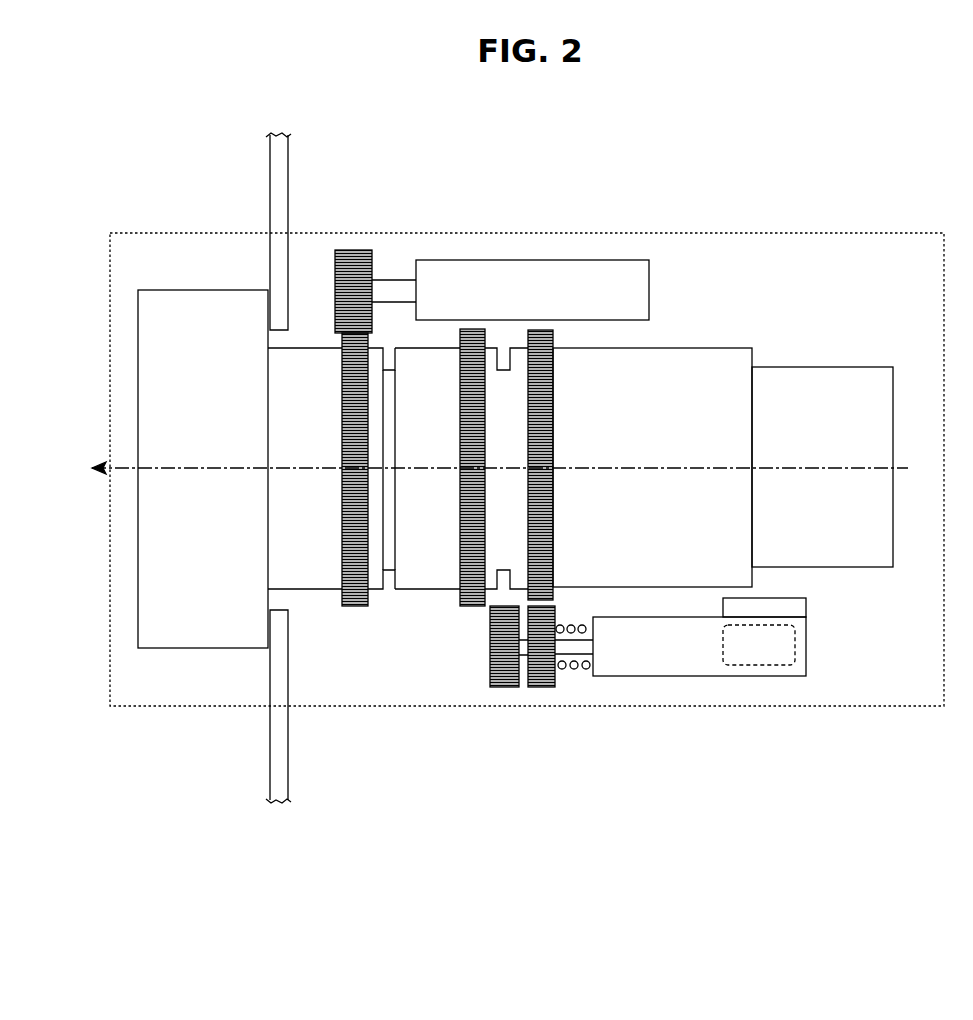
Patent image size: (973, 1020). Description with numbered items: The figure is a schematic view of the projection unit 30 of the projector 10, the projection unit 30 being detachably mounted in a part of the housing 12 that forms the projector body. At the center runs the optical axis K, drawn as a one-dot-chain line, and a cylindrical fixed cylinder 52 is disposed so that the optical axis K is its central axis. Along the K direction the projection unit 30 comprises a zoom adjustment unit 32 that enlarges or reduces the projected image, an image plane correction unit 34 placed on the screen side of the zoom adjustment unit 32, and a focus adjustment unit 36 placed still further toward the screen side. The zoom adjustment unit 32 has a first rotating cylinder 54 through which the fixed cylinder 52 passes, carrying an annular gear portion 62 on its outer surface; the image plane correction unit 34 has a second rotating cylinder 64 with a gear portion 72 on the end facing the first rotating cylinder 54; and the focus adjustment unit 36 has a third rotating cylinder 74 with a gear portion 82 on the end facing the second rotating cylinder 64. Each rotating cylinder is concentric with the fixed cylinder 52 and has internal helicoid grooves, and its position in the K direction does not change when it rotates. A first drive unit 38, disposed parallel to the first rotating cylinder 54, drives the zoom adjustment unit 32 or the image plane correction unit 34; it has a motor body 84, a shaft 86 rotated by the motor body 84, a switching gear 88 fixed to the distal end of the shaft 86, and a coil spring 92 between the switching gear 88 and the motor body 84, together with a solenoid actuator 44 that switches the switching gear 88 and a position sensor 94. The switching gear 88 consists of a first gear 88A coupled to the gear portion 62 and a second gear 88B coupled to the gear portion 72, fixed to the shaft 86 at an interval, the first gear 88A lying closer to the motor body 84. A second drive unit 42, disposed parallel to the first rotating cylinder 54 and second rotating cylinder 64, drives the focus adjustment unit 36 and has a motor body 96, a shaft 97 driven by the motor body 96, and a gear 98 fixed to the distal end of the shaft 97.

The projector 10 is at (78, 188).
The housing 12 is at (270, 182).
The projection unit 30 is at (840, 233).
The optical axis K is at (130, 468).
The zoom adjustment unit 32 is at (688, 338).
The image plane correction unit 34 is at (412, 600).
The focus adjustment unit 36 is at (194, 663).
The first drive unit 38 is at (620, 680).
The second drive unit 42 is at (612, 256).
The solenoid actuator 44 is at (800, 645).
The fixed cylinder 52 is at (826, 367).
The first rotating cylinder 54 is at (737, 348).
The gear portion 62 is at (553, 343).
The second rotating cylinder 64 is at (428, 594).
The gear portion 72 is at (471, 608).
The third rotating cylinder 74 is at (307, 592).
The gear portion 82 is at (352, 608).
The motor body 84 is at (690, 677).
The shaft 86 is at (575, 671).
The switching gear 88 is at (495, 694).
The first gear 88A is at (540, 688).
The second gear 88B is at (503, 688).
The coil spring 92 is at (576, 619).
The position sensor 94 is at (806, 605).
The motor body 96 is at (530, 260).
The shaft 97 is at (395, 280).
The gear 98 is at (352, 250).